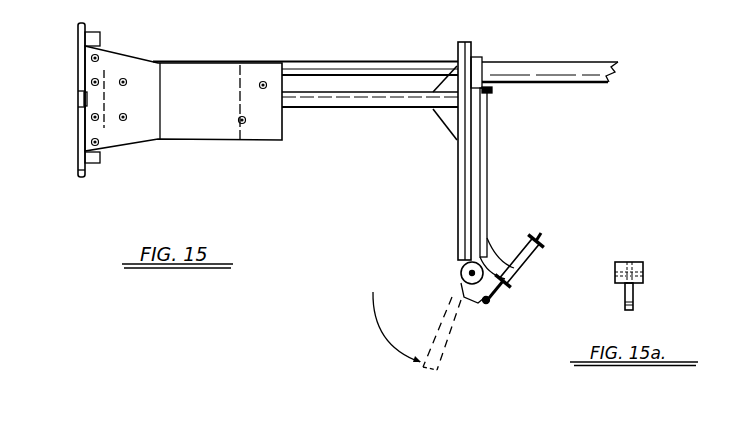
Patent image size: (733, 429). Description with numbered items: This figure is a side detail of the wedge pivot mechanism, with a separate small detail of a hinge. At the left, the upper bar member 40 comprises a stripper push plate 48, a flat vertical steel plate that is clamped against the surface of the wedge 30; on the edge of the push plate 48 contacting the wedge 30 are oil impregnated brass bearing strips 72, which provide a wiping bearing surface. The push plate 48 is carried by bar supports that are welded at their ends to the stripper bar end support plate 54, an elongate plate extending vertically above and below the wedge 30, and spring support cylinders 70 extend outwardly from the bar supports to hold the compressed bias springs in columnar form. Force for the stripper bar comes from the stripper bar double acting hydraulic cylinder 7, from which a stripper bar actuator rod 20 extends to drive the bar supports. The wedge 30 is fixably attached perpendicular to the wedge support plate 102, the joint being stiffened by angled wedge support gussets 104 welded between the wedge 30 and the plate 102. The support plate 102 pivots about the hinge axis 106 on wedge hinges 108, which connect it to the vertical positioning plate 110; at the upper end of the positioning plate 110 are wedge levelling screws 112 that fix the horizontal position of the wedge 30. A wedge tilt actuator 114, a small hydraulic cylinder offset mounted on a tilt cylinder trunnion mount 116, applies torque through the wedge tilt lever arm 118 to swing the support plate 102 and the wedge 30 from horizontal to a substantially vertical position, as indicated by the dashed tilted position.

In FIG. 15, the stripper bar double acting hydraulic cylinder 7 is at (546, 62).
In FIG. 15, the stripper bar actuator rod 20 is at (380, 61).
In FIG. 15, the wedge 30 is at (80, 100).
In FIG. 15, the upper bar member 40 is at (78, 35).
In FIG. 15, the stripper push plate 48 is at (78, 167).
In FIG. 15, the stripper bar end support plate 54 is at (148, 141).
In FIG. 15, the spring support cylinder 70 is at (100, 37).
In FIG. 15, the oil impregnated brass bearing strip 72 is at (80, 90).
In FIG. 15, the wedge support plate 102 is at (458, 190).
In FIG. 15, the wedge support gusset 104 is at (442, 86).
In FIG. 15, the hinge axis 106 is at (461, 273).
In FIG. 15A, the hinge axis 106 is at (615, 276).
In FIG. 15, the wedge hinge 108 is at (458, 286).
In FIG. 15A, the wedge hinge 108 is at (615, 265).
In FIG. 15, the vertical positioning plate 110 is at (490, 118).
In FIG. 15, the wedge levelling screw 112 is at (492, 91).
In FIG. 15, the wedge tilt actuator 114 is at (533, 268).
In FIG. 15, the tilt cylinder trunnion mount 116 is at (497, 258).
In FIG. 15, the wedge tilt lever arm 118 is at (470, 304).
In FIG. 15A, the wedge tilt lever arm 118 is at (633, 294).